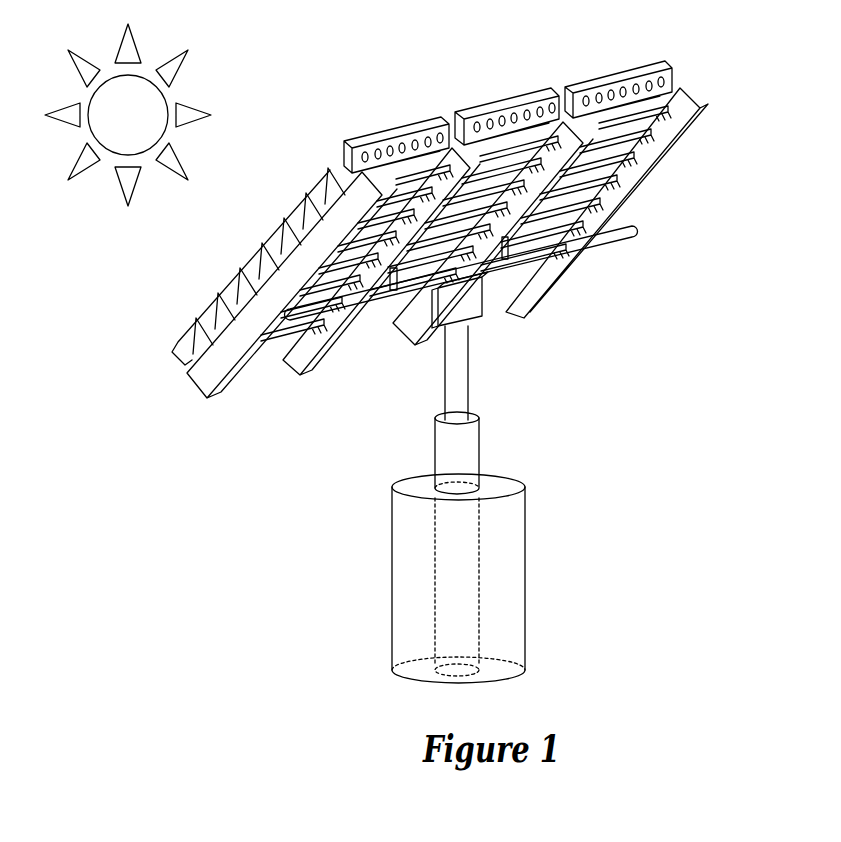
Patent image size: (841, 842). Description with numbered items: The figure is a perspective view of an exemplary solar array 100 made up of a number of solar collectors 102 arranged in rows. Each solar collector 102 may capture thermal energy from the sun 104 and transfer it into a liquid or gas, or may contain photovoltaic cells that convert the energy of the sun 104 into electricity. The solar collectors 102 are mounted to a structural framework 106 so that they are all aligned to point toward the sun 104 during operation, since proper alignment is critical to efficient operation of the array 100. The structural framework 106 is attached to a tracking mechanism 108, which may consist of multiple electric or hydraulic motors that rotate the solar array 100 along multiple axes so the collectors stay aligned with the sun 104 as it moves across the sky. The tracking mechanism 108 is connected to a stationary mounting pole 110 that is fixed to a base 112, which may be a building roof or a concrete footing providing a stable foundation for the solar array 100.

The solar array 100 is at (737, 115).
The solar collector 102 is at (345, 165).
The sun 104 is at (143, 124).
The structural framework 106 is at (593, 240).
The tracking mechanism 108 is at (462, 302).
The stationary mounting pole 110 is at (455, 398).
The base 112 is at (414, 487).